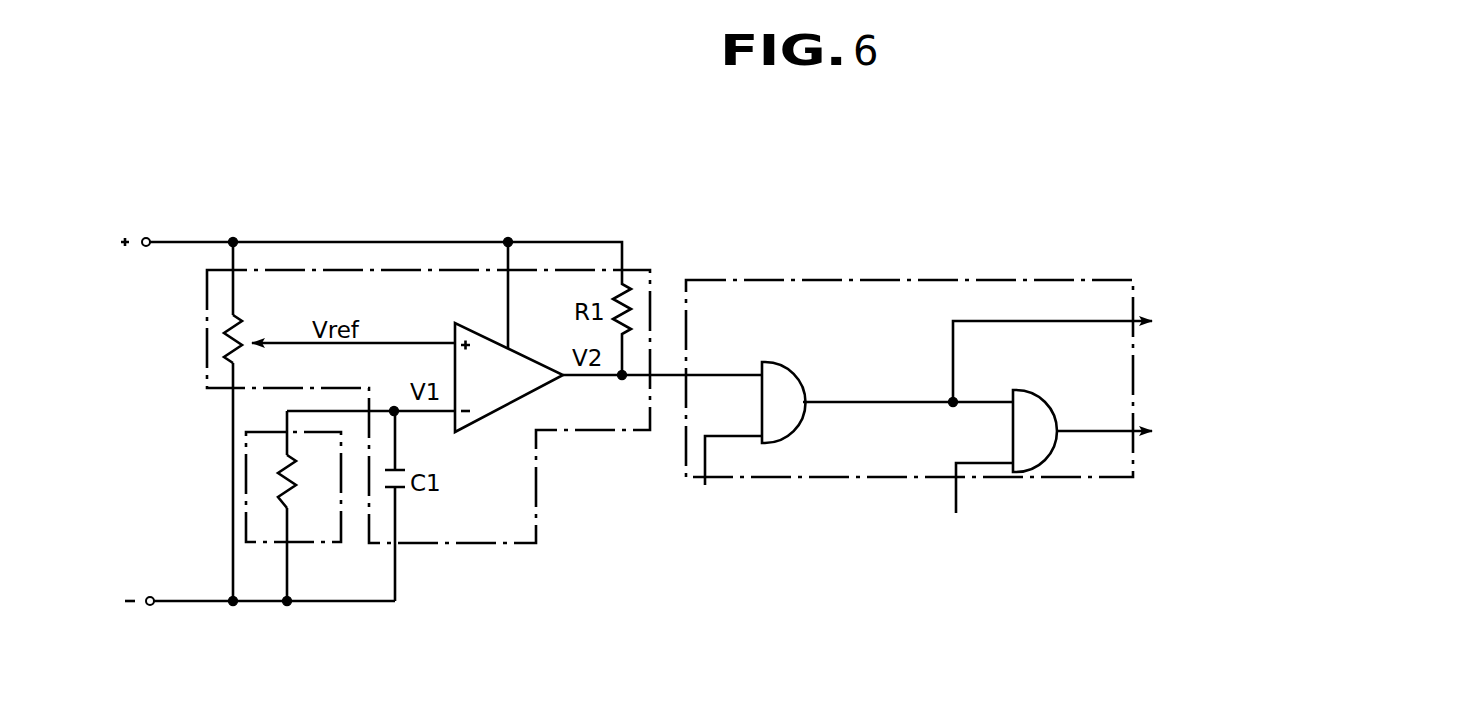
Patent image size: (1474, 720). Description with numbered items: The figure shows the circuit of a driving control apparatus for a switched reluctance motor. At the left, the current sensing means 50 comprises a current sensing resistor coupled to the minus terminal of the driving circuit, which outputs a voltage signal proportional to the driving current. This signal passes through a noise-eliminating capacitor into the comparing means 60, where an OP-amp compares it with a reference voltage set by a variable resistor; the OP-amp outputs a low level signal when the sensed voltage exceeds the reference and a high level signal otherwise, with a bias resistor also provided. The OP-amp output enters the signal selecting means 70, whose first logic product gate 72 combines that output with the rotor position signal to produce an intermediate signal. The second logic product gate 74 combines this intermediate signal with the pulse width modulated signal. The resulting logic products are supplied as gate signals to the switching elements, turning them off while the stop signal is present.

The current sensing means 50 is at (341, 542).
The comparing means 60 is at (528, 543).
The signal selecting means 70 is at (826, 280).
The first logic product gate 72 is at (799, 370).
The second logic product gate 74 is at (1040, 472).